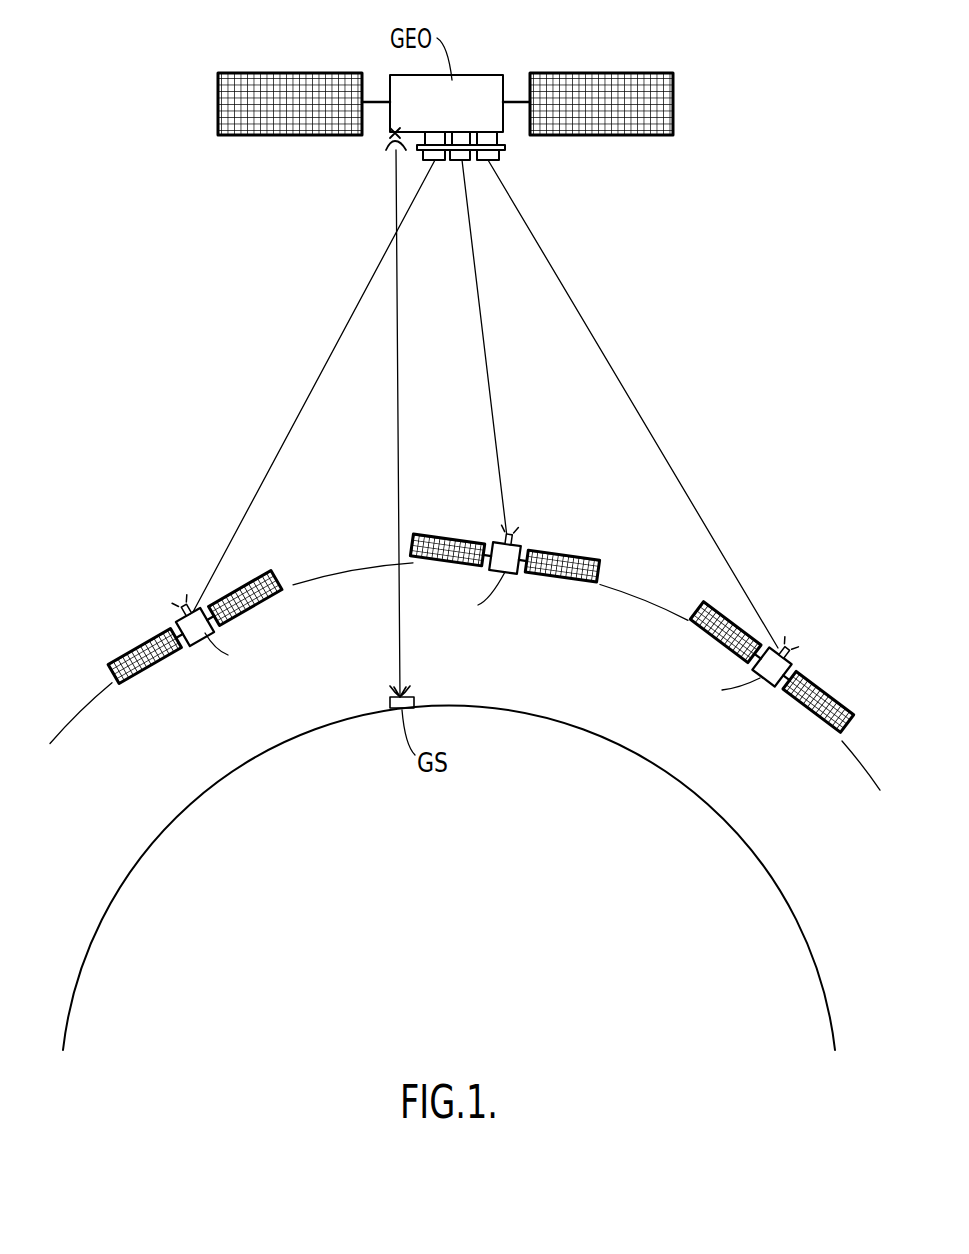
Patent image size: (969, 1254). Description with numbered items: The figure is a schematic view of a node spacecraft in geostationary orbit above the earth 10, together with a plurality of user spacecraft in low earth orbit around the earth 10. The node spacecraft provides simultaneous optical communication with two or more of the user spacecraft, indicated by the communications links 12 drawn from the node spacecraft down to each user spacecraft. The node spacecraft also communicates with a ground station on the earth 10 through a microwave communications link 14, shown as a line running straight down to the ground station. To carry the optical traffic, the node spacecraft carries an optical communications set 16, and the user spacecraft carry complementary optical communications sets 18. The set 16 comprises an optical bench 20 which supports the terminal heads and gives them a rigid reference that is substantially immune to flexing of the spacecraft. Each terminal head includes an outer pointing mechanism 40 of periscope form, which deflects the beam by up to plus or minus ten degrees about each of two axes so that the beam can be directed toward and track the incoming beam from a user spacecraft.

The earth 10 is at (452, 951).
The communications links 12 is at (614, 373).
The microwave communications link 14 is at (398, 474).
The optical communications set 16 is at (499, 161).
The optical communications sets 18 is at (820, 655).
The optical bench 20 is at (505, 147).
The outer pointing mechanism 40 is at (193, 607).